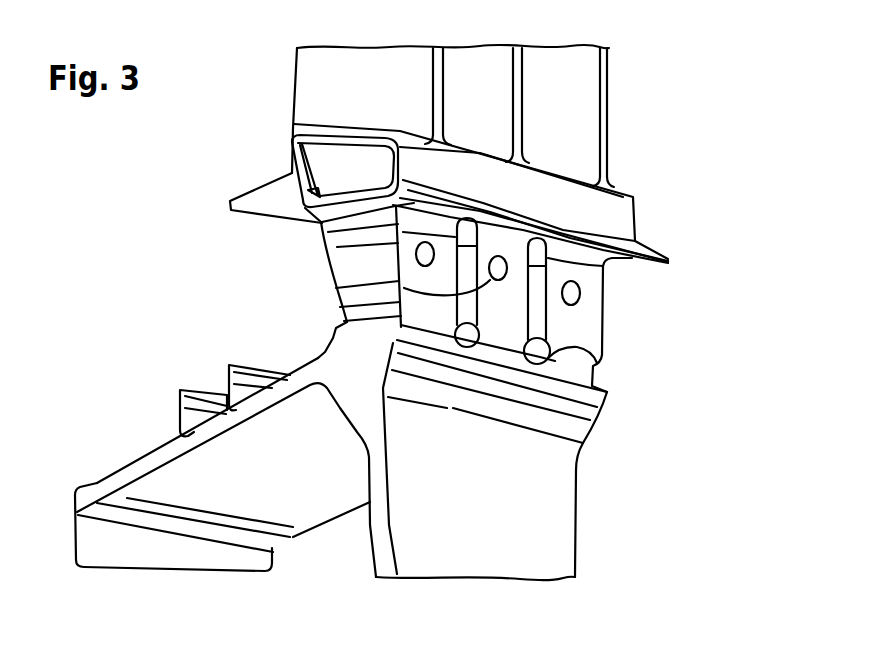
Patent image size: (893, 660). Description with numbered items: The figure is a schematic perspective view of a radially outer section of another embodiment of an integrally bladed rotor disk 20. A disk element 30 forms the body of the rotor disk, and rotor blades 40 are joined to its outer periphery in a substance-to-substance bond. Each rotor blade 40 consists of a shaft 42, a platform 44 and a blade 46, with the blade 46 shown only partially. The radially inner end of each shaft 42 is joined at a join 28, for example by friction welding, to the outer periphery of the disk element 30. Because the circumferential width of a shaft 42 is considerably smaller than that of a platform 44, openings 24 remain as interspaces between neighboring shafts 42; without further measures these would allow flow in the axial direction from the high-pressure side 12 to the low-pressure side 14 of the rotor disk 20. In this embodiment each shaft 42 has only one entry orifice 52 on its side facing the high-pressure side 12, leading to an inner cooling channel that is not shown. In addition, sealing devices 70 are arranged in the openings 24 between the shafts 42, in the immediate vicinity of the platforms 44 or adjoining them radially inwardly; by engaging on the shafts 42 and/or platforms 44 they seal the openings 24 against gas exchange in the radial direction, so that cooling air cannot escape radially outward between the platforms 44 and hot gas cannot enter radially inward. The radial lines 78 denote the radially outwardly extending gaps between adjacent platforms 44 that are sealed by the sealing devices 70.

The high-pressure side 12 is at (613, 473).
The low-pressure side 14 is at (287, 342).
The integrally bladed rotor disk 20 is at (210, 205).
The openings 24 is at (546, 316).
The join 28 is at (520, 344).
The disk element 30 is at (560, 538).
The rotor blades 40 is at (567, 87).
The shaft 42 is at (357, 267).
The platform 44 is at (332, 158).
The blade 46 is at (330, 88).
The entry orifice 52 is at (417, 263).
The sealing devices 70 is at (337, 247).
The radial lines 78 is at (487, 181).